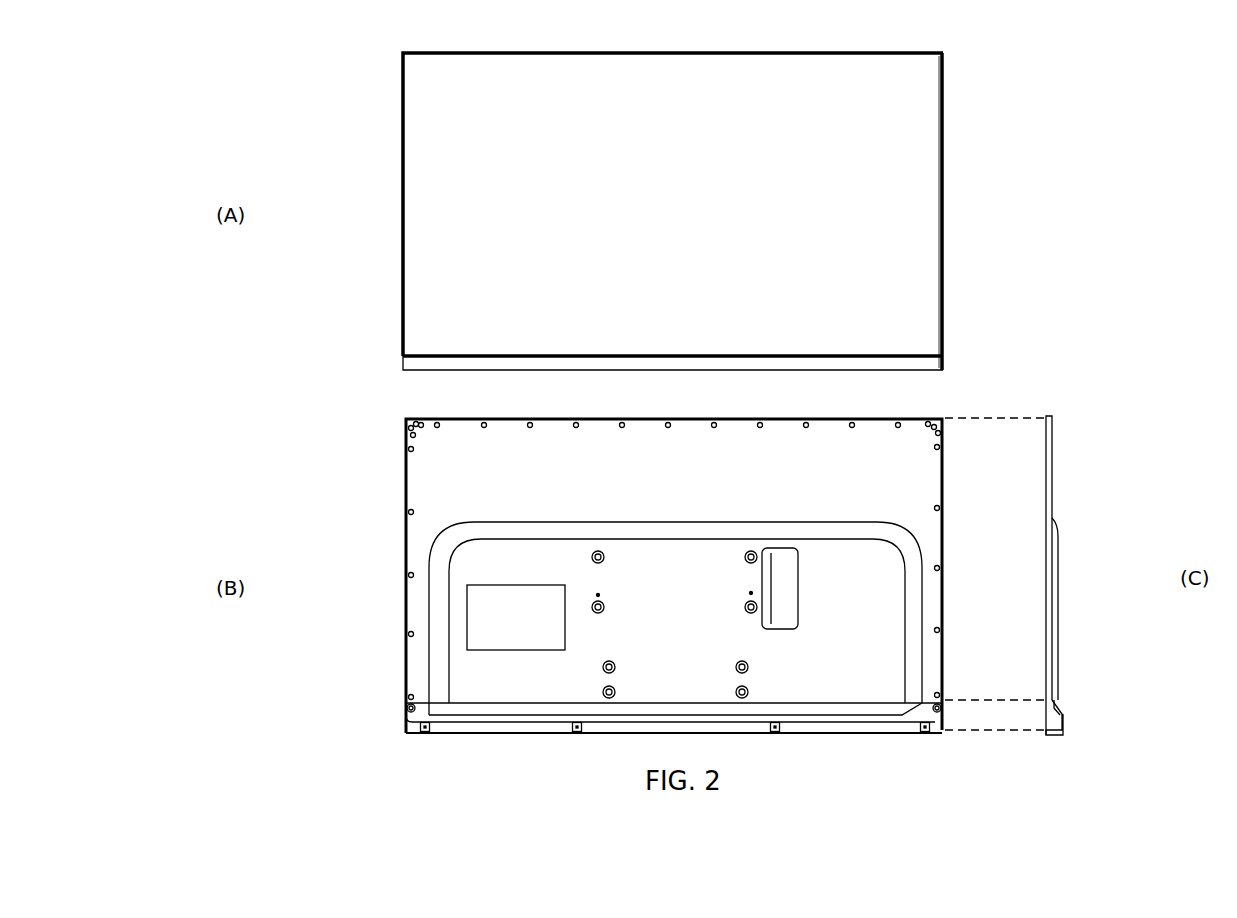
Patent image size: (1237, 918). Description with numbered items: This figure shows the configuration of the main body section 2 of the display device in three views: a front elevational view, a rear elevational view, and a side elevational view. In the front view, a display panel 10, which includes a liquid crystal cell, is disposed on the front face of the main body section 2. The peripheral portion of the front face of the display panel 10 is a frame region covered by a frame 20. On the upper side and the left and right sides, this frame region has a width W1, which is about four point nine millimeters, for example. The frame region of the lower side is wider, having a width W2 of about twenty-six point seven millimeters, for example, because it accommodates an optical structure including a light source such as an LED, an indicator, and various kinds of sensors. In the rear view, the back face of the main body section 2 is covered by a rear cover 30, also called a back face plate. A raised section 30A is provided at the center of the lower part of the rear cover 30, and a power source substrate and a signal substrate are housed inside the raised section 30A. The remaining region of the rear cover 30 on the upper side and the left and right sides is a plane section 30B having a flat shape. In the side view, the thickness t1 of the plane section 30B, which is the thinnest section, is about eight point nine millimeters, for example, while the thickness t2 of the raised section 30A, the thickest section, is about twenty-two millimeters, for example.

The main body section 2 is at (1004, 73).
The display panel 10 is at (930, 211).
The frame 20 is at (946, 246).
The rear cover 30 is at (336, 468).
The raised section 30A is at (485, 573).
The plane section 30B is at (412, 478).
The width of frame region W1 is at (723, 78).
The width of lower frame region W2 is at (749, 330).
The thickness of plane section t1 is at (1028, 428).
The thickness of raised section t2 is at (1028, 623).